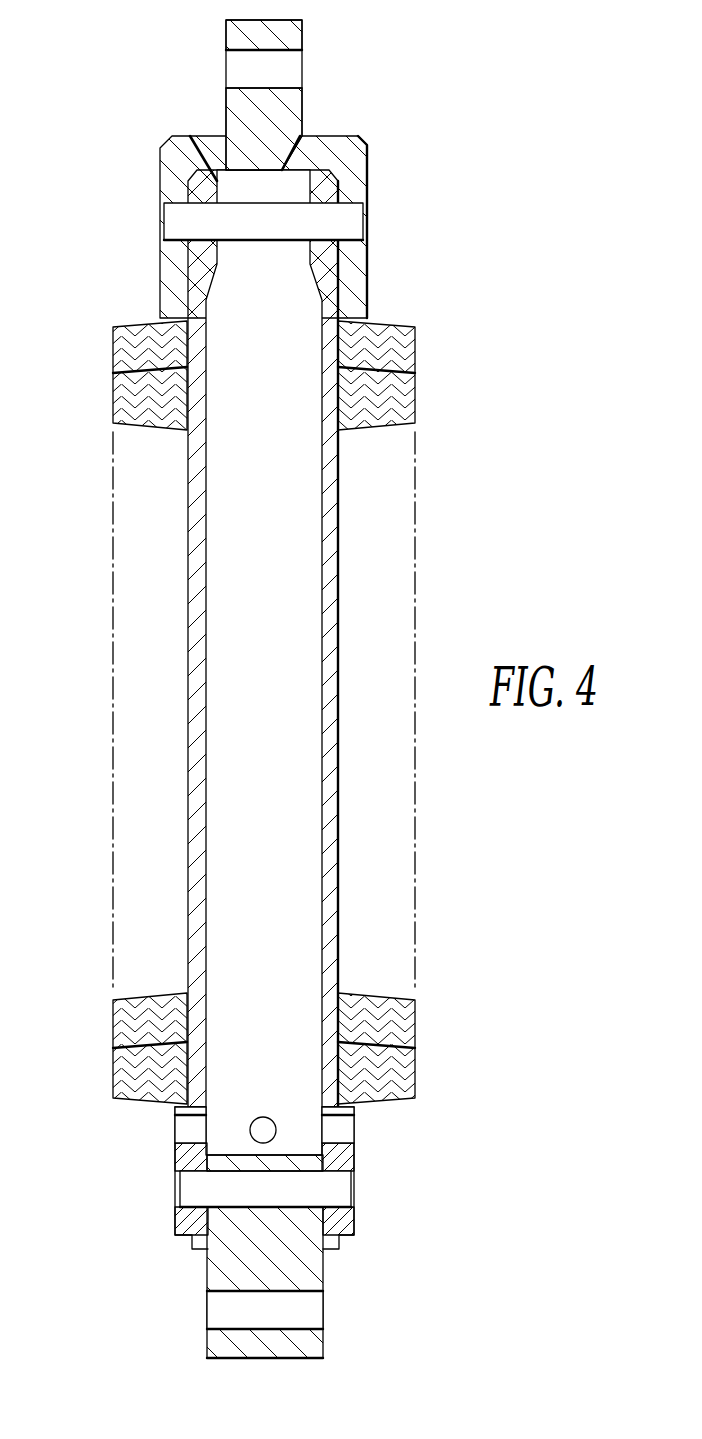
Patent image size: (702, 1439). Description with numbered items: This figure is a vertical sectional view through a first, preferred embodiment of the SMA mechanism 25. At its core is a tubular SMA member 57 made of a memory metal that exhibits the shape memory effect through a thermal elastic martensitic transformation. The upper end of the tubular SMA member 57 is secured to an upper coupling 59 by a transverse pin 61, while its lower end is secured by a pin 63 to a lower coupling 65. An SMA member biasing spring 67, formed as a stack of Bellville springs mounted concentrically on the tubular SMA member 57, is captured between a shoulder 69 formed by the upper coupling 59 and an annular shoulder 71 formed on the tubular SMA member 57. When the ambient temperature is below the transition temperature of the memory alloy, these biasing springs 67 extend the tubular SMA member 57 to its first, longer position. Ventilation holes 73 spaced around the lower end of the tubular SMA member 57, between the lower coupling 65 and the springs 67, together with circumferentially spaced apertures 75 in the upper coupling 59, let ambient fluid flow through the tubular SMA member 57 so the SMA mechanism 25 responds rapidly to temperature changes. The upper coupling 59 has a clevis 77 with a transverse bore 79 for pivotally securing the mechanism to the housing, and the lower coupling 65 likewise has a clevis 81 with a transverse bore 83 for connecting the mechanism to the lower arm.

The SMA mechanism 25 is at (55, 644).
The tubular SMA member 57 is at (340, 630).
The upper coupling 59 is at (369, 172).
The transverse pin 61 is at (178, 225).
The pin 63 is at (195, 1190).
The lower coupling 65 is at (209, 1246).
The SMA member biasing spring 67 is at (416, 1010).
The shoulder 69 is at (160, 323).
The annular shoulder 71 is at (186, 1101).
The ventilation holes 73 is at (275, 1123).
The circumferentially spaced apertures 75 is at (207, 150).
The clevis 77 is at (303, 34).
The transverse bore 79 is at (250, 60).
The clevis 81 is at (324, 1338).
The transverse bore 83 is at (222, 1293).